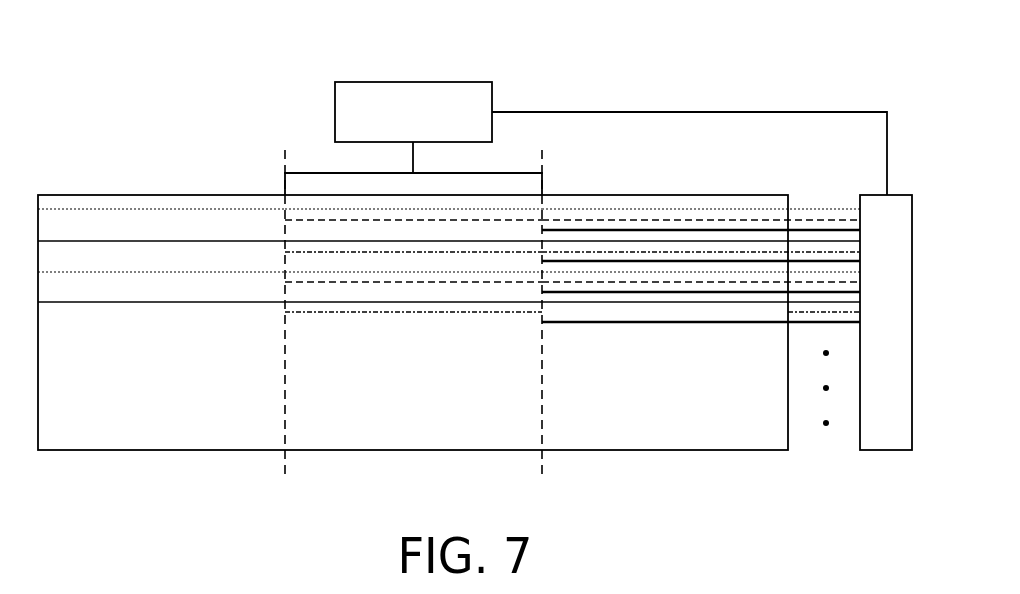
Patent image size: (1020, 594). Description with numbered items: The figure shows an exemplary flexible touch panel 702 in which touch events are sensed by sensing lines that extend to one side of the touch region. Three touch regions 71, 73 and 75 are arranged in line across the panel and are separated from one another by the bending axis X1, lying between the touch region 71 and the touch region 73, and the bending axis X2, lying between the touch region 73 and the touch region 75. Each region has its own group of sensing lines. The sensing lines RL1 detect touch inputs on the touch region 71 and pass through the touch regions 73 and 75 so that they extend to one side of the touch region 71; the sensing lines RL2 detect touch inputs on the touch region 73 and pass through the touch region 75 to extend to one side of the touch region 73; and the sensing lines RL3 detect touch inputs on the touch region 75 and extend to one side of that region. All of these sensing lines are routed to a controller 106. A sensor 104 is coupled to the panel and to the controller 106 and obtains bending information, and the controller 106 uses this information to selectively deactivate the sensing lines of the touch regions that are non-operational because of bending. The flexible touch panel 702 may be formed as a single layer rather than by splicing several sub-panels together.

The flexible touch panel 702 is at (158, 195).
The touch region 71 is at (37, 73).
The touch region 73 is at (285, 73).
The touch region 75 is at (540, 73).
The sensor 104 is at (334, 112).
The controller 106 is at (887, 452).
The bending axis X1 is at (285, 306).
The bending axis X2 is at (540, 306).
The sensing lines RL1 is at (158, 302).
The sensing lines RL2 is at (413, 312).
The sensing lines RL3 is at (665, 322).